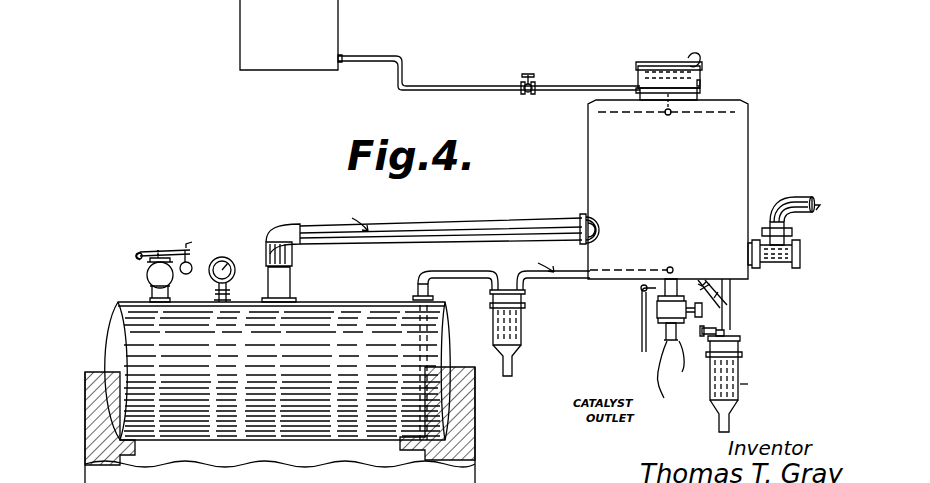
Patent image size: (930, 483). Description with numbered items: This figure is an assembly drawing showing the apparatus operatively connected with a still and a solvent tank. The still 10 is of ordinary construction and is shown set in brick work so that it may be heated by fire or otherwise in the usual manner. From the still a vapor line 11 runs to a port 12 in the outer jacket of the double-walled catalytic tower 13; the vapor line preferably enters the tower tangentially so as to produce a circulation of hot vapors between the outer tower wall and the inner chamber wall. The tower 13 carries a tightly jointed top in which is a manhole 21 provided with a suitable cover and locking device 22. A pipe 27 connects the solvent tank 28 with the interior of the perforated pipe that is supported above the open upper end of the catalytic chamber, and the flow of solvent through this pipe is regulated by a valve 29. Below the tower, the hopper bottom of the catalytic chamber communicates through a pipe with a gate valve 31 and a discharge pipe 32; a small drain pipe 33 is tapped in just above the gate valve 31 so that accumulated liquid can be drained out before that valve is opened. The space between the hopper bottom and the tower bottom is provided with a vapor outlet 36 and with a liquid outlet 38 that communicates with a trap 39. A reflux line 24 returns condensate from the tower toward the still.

The still 10 is at (330, 320).
The vapor line 11 is at (431, 237).
The port 12 is at (597, 225).
The catalytic tower 13 is at (668, 186).
The manhole 21 is at (702, 86).
The cover and locking device 22 is at (668, 66).
The reflux line 24 is at (548, 280).
The pipe 27 is at (463, 87).
The tank 28 is at (289, 35).
The valve 29 is at (534, 82).
The gate valve 31 is at (668, 321).
The discharge pipe 32 is at (681, 335).
The drain pipe 33 is at (641, 326).
The vapor outlet 36 is at (792, 205).
The liquid outlet 38 is at (733, 296).
The trap 39 is at (738, 376).